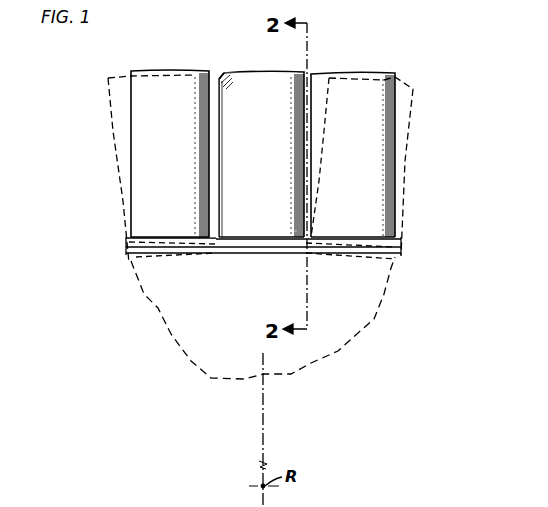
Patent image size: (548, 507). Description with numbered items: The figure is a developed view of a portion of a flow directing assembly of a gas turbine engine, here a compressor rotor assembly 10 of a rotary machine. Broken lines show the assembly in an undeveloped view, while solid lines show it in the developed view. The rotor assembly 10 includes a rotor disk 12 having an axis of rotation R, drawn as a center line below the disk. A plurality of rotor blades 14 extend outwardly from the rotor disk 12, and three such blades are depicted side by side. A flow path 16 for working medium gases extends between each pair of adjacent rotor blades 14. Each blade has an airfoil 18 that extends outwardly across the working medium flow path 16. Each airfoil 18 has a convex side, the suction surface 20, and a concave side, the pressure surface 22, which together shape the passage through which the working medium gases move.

The compressor rotor assembly 10 is at (424, 119).
The rotor disk 12 is at (267, 298).
The rotor blades 14 is at (148, 69).
The flow path 16 is at (217, 144).
The airfoil 18 is at (265, 178).
The suction surface 20 is at (277, 123).
The pressure surface 22 is at (228, 77).